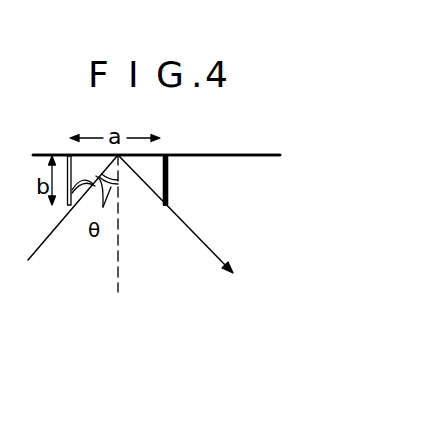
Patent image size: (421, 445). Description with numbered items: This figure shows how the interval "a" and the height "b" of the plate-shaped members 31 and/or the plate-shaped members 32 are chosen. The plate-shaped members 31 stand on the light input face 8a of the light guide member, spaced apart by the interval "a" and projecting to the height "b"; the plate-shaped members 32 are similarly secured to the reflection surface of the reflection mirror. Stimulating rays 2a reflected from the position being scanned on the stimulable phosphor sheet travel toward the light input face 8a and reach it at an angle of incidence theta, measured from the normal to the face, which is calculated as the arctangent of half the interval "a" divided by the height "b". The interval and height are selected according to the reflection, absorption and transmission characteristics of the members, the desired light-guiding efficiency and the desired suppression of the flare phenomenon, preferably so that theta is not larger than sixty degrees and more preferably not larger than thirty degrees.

The light input face 8a is at (200, 153).
The plate-shaped members 31 is at (169, 178).
The plate-shaped members 32 is at (166, 180).
The reflected stimulating rays 2a is at (47, 238).